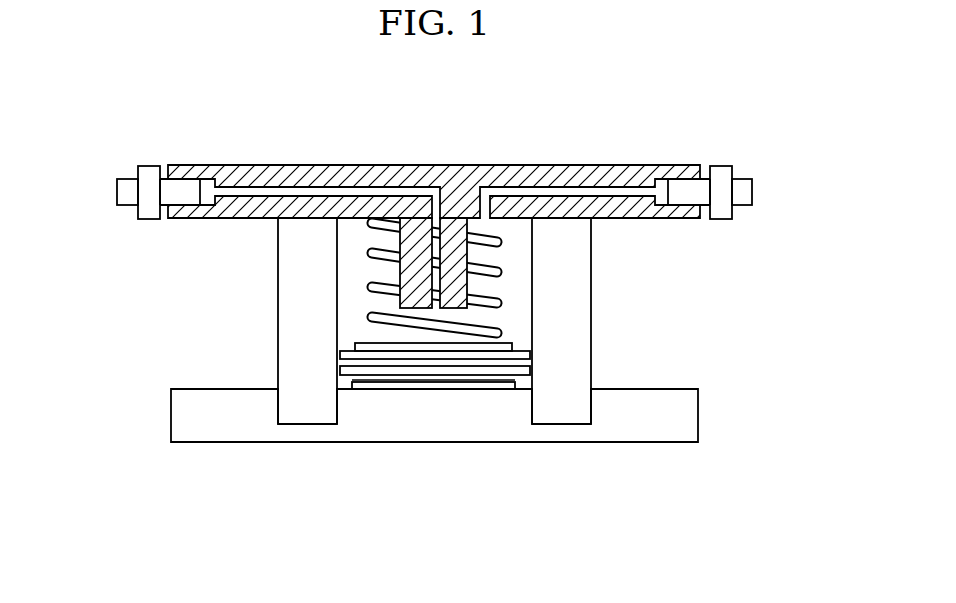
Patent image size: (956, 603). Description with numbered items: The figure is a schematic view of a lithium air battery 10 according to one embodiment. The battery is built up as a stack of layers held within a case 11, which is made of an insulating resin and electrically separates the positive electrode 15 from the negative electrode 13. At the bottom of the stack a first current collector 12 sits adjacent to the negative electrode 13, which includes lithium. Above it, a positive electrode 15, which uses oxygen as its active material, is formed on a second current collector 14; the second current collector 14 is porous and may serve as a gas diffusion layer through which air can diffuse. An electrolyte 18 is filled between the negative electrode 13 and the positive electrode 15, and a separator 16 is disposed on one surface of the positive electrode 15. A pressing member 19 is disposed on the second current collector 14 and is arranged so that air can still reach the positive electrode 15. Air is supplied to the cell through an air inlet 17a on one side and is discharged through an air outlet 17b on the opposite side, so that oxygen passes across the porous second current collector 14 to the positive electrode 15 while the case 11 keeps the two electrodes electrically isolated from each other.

The lithium air battery 10 is at (650, 135).
The case 11 is at (283, 277).
The first current collector 12 is at (698, 416).
The negative electrode 13 is at (513, 386).
The second current collector 14 is at (512, 346).
The positive electrode 15 is at (530, 355).
The separator 16 is at (340, 371).
The air inlet 17a is at (110, 192).
The air outlet 17b is at (800, 193).
The electrolyte 18 is at (355, 380).
The pressing member 19 is at (497, 242).